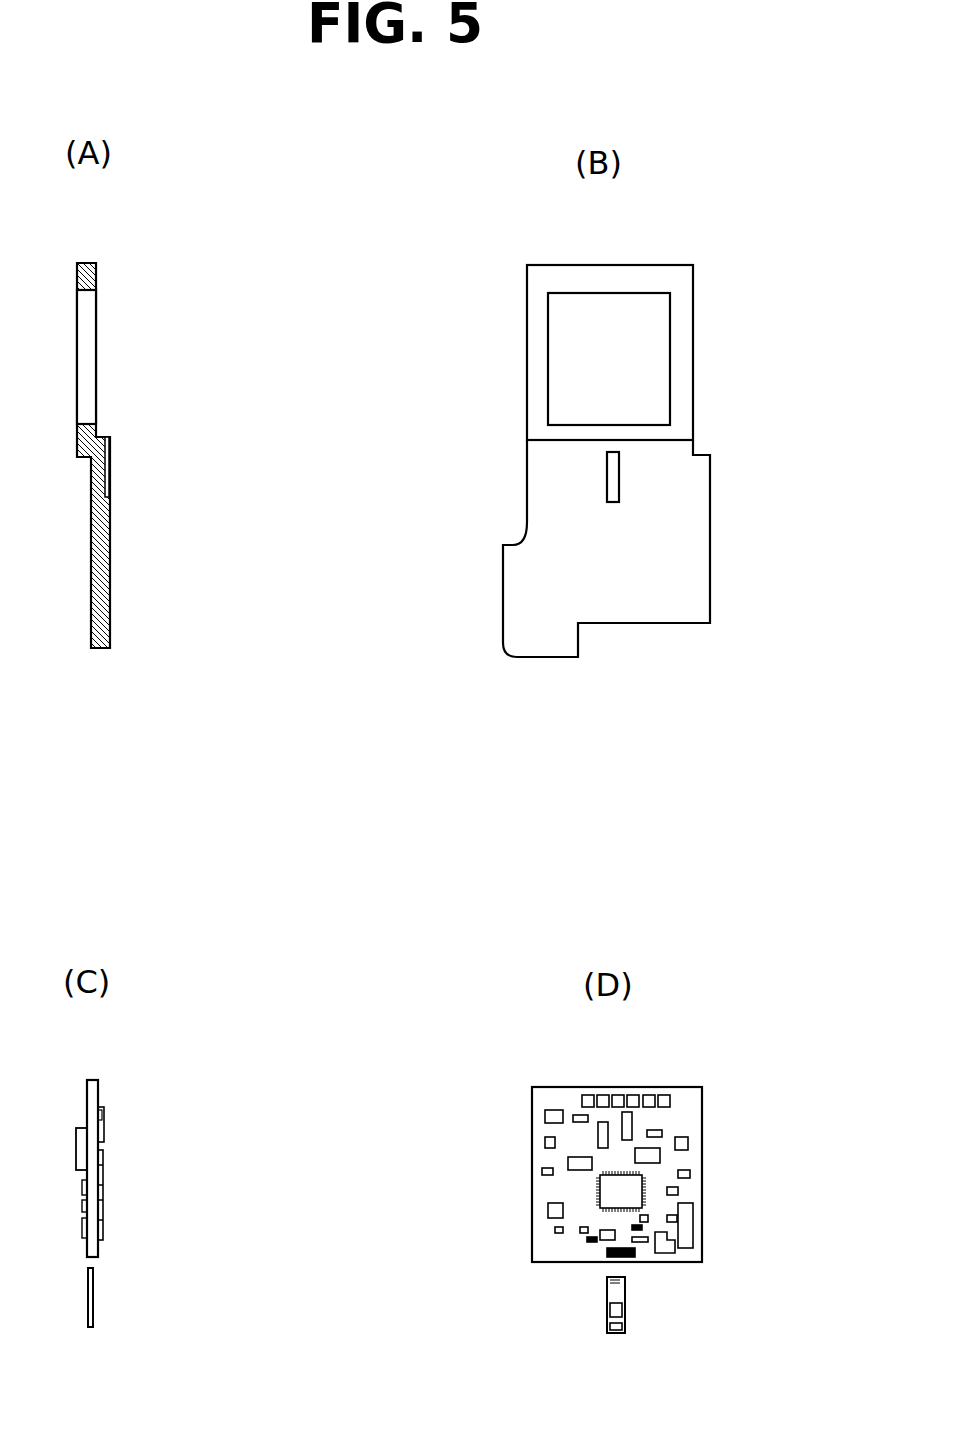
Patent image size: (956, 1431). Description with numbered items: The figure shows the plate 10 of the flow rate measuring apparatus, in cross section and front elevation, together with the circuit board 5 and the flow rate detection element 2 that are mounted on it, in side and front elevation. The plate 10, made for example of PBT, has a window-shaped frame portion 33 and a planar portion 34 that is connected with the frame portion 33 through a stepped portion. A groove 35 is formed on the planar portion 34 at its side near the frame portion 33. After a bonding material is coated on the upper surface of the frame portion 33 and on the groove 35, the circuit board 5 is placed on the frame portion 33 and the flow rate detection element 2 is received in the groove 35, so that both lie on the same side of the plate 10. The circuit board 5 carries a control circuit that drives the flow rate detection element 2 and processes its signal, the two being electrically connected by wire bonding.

The frame portion 33 is at (93, 273).
The planar portion 34 is at (110, 602).
The groove 35 is at (107, 468).
The plate 10 is at (103, 545).
The circuit board 5 is at (95, 1092).
The flow rate detection element 2 is at (93, 1298).